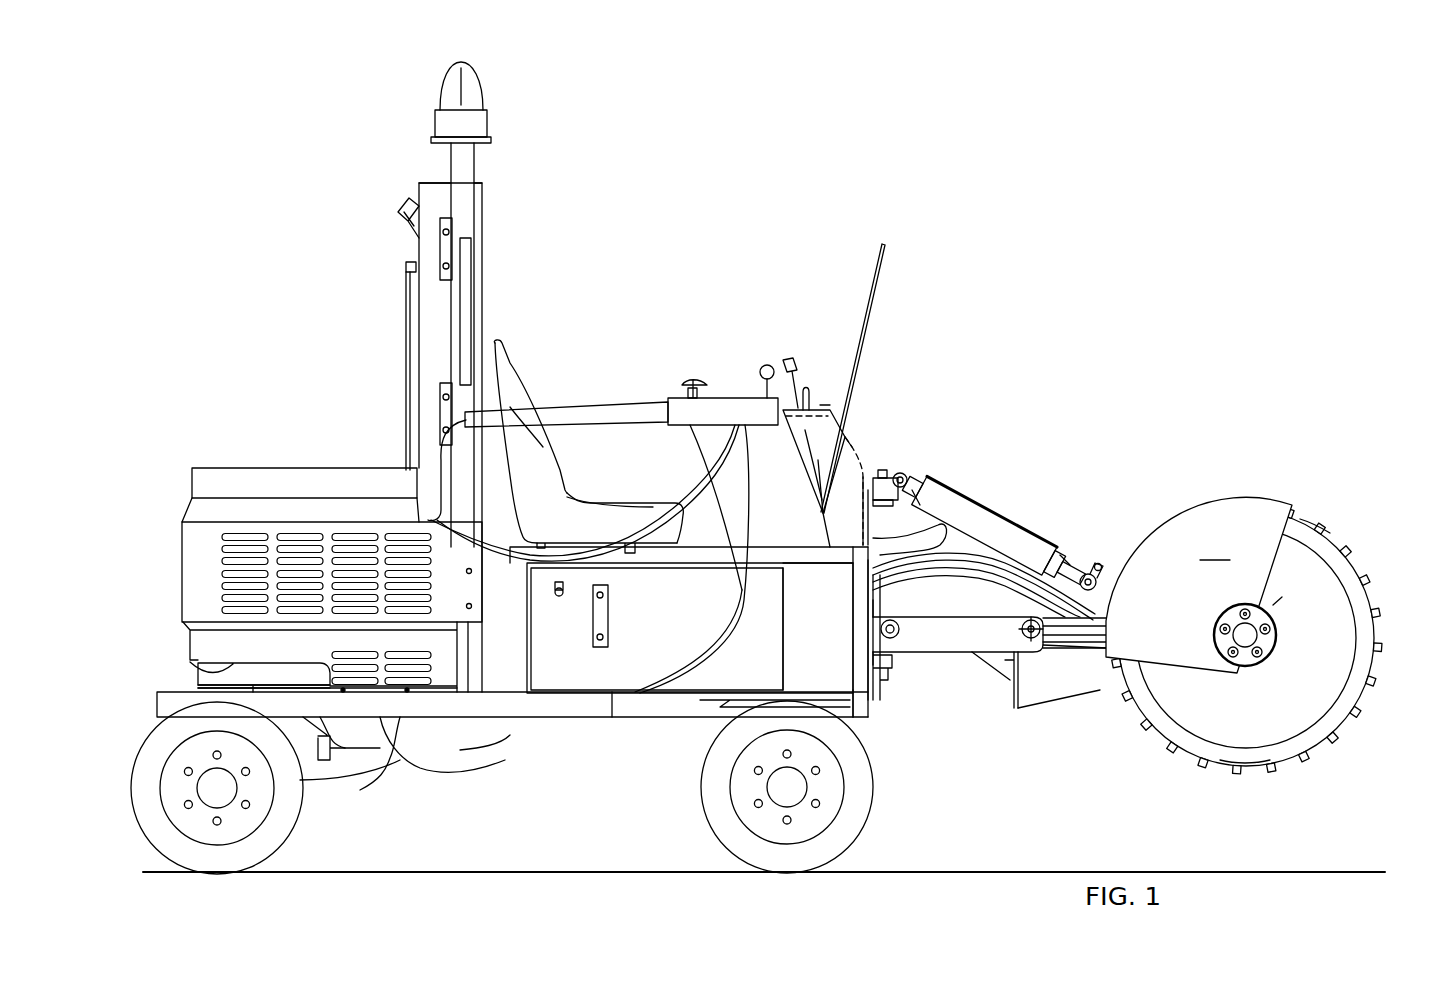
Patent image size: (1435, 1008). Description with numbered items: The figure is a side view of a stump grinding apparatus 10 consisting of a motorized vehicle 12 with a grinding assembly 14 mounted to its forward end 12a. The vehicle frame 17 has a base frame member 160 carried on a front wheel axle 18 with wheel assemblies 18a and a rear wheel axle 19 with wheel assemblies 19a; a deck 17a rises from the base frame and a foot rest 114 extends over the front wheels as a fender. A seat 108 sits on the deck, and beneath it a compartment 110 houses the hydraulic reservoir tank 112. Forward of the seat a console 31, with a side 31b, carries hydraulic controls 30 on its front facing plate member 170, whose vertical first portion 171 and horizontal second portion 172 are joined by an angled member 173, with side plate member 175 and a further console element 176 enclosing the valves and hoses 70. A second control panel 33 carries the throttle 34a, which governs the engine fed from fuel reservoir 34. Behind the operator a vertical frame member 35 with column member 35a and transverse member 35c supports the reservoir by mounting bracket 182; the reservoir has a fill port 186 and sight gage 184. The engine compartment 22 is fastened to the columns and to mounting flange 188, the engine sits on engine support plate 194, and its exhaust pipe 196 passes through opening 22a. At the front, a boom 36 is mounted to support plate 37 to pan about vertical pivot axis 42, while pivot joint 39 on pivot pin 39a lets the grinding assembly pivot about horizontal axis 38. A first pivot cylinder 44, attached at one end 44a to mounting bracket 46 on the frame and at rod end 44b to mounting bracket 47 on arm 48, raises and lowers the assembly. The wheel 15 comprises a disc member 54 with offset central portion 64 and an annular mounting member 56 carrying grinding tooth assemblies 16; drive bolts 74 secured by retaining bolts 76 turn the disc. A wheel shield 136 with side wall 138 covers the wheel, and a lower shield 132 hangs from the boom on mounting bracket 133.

The stump grinding apparatus 10 is at (945, 232).
The motorized vehicle 12 is at (710, 290).
The forward end of vehicle 12a is at (875, 437).
The grinding assembly 14 is at (1265, 566).
The wheel 15 is at (1330, 522).
The grinding tooth assemblies 16 is at (1390, 637).
The vehicle frame 17 is at (550, 720).
The deck 17a is at (713, 483).
The wheel axle 18 is at (833, 787).
The wheel assemblies 18a is at (860, 788).
The wheel axle 19 is at (265, 788).
The wheel assemblies 19a is at (285, 800).
The engine compartment 22 is at (225, 468).
The opening 22a is at (190, 660).
The hydraulic controls 30 is at (786, 335).
The vehicle console 31 is at (830, 400).
The side of console 31b is at (828, 510).
The second control panel 33 is at (733, 398).
The fuel reservoir 34 is at (480, 195).
The throttle 34a is at (693, 383).
The vertical frame member 35 is at (450, 168).
The column member 35a is at (470, 210).
The transverse member 35c is at (470, 155).
The support member or boom 36 is at (920, 645).
The support plate 37 is at (870, 680).
The horizontal axis of rotation 38 is at (1030, 652).
The pivot joint 39 is at (1031, 622).
The pivot pin 39a is at (1020, 630).
The vertical pivot axis 42 is at (885, 675).
The first pivot cylinder 44 is at (1025, 497).
The one end of first pivot cylinder 44a is at (925, 485).
The rod end of first pivot cylinder 44b is at (1062, 560).
The mounting bracket 46 is at (900, 465).
The mounting bracket 47 is at (1095, 590).
The arm 48 is at (1088, 675).
The disc member 54 is at (1310, 690).
The annular mounting member 56 is at (1247, 760).
The central portion of disc member 64 is at (1272, 606).
The hoses 70 is at (965, 570).
The drive bolts 74 is at (1271, 640).
The retaining bolts 76 is at (1268, 640).
The seat 108 is at (497, 350).
The compartment 110 is at (840, 625).
The hydraulic reservoir tank 112 is at (770, 660).
The foot rest 114 is at (863, 690).
The shield 132 is at (1060, 700).
The mounting bracket 133 is at (995, 660).
The wheel shield 136 is at (1180, 500).
The side wall 138 is at (1240, 505).
The base frame member 160 is at (612, 710).
The front facing plate member 170 is at (850, 440).
The first portion 171 is at (875, 555).
The second portion 172 is at (820, 405).
The transition or angled member 173 is at (905, 452).
The side plate member 175 is at (812, 445).
The console side 176 is at (820, 470).
The mounting bracket 182 is at (440, 242).
The sight gage 184 is at (400, 393).
The fill port 186 is at (412, 212).
The mounting flange 188 is at (390, 700).
The engine support plate 194 is at (282, 690).
The exhaust pipe 196 is at (198, 682).